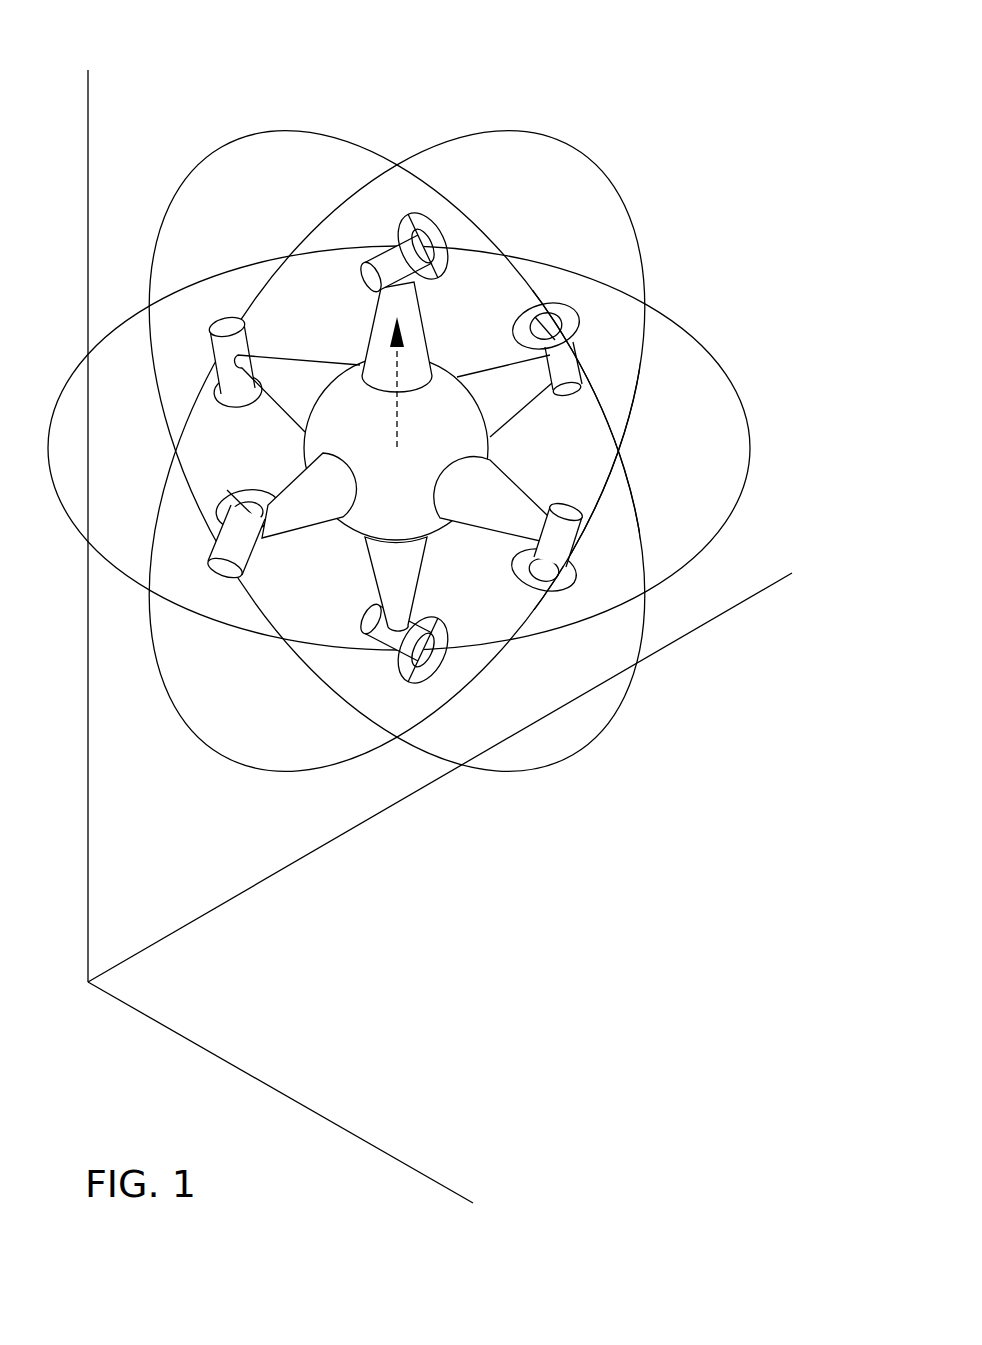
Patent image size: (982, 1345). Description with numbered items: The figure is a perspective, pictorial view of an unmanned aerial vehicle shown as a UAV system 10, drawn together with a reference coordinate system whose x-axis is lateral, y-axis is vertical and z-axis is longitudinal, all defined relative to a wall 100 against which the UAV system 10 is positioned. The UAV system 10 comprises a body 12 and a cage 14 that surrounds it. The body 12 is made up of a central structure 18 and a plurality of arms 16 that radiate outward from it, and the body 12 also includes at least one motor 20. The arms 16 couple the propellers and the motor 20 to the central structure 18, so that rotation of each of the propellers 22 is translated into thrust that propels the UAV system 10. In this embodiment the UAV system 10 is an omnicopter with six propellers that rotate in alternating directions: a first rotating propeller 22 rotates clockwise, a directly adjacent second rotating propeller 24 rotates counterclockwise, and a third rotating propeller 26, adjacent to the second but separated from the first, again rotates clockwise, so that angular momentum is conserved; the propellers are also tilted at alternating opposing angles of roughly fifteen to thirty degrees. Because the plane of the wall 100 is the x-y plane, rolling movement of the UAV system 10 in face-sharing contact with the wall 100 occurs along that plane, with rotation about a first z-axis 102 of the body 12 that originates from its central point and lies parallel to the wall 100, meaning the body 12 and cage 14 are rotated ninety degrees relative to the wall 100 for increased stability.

The UAV system 10 is at (436, 107).
The body 12 is at (605, 445).
The cage 14 is at (633, 218).
The arms 16 is at (373, 573).
The central structure 18 is at (360, 365).
The motor 20 is at (368, 643).
The propellers 22 is at (430, 672).
The second rotating propeller 24 is at (572, 590).
The third rotating propeller 26 is at (428, 228).
The wall 100 is at (110, 152).
The first z-axis 102 is at (396, 417).